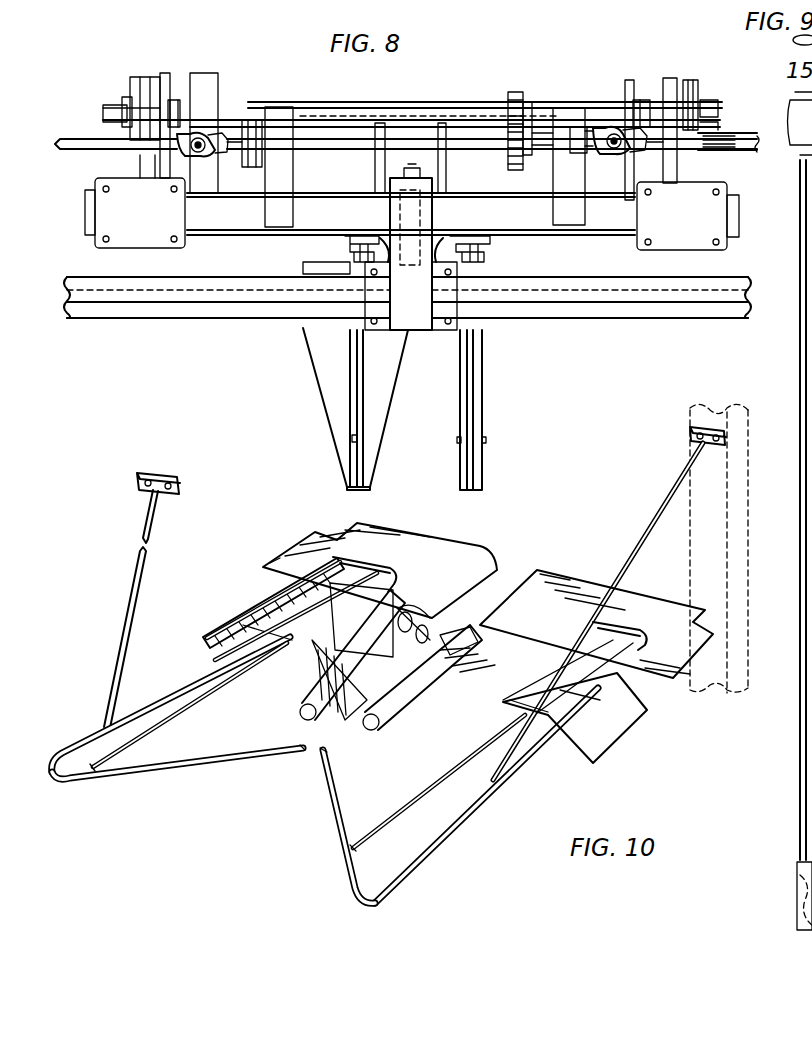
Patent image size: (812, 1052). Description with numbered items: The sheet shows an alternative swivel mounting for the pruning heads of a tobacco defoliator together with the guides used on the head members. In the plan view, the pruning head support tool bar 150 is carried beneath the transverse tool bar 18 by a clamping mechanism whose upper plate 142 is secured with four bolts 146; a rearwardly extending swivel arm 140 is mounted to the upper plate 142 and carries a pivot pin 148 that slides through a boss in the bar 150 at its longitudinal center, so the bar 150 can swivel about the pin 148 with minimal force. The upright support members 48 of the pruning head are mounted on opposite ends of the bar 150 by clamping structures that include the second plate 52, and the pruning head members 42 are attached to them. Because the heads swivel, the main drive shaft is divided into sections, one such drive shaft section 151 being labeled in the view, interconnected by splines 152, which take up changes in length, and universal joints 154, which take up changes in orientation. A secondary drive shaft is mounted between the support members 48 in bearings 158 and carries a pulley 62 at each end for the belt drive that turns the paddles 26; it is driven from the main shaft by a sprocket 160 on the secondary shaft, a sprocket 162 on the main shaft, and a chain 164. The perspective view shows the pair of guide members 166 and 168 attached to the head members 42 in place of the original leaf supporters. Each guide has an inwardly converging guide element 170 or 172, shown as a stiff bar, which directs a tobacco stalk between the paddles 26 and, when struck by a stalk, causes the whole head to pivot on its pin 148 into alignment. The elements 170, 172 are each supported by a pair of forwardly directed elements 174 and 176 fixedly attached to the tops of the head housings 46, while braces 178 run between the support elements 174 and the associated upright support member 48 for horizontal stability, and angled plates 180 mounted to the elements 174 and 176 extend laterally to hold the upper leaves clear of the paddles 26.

In FIG. 8, the tool bar 18 is at (137, 300).
In FIG. 8, the rotatable paddles 26 is at (473, 383).
In FIG. 10, the rotatable paddles 26 is at (400, 730).
In FIG. 10, the head members 42 is at (497, 541).
In FIG. 10, the head housings 46 is at (405, 550).
In FIG. 10, the support members 48 is at (750, 455).
In FIG. 8, the second plate 52 is at (150, 226).
In FIG. 8, the pulley 62 is at (128, 97).
In FIG. 8, the swivel arm 140 is at (398, 208).
In FIG. 8, the upper plate 142 is at (440, 318).
In FIG. 8, the bolts 146 is at (450, 322).
In FIG. 8, the pivot pin 148 is at (411, 166).
In FIG. 8, the pruning head support tool bar 150 is at (605, 212).
In FIG. 8, the drive shaft 151 is at (340, 122).
In FIG. 8, the splines 152 is at (727, 118).
In FIG. 8, the universal joints 154 is at (222, 128).
In FIG. 8, the bearings 158 is at (178, 100).
In FIG. 8, the sprocket 160 is at (530, 101).
In FIG. 8, the sprocket 162 is at (506, 141).
In FIG. 8, the chain 164 is at (515, 92).
In FIG. 10, the guide member 166 is at (95, 640).
In FIG. 10, the guide member 168 is at (523, 760).
In FIG. 10, the guide element 170 is at (130, 770).
In FIG. 10, the guide element 172 is at (333, 808).
In FIG. 10, the support element 174 is at (162, 690).
In FIG. 10, the support element 176 is at (232, 688).
In FIG. 10, the braces 178 is at (152, 525).
In FIG. 10, the angled plates 180 is at (288, 608).